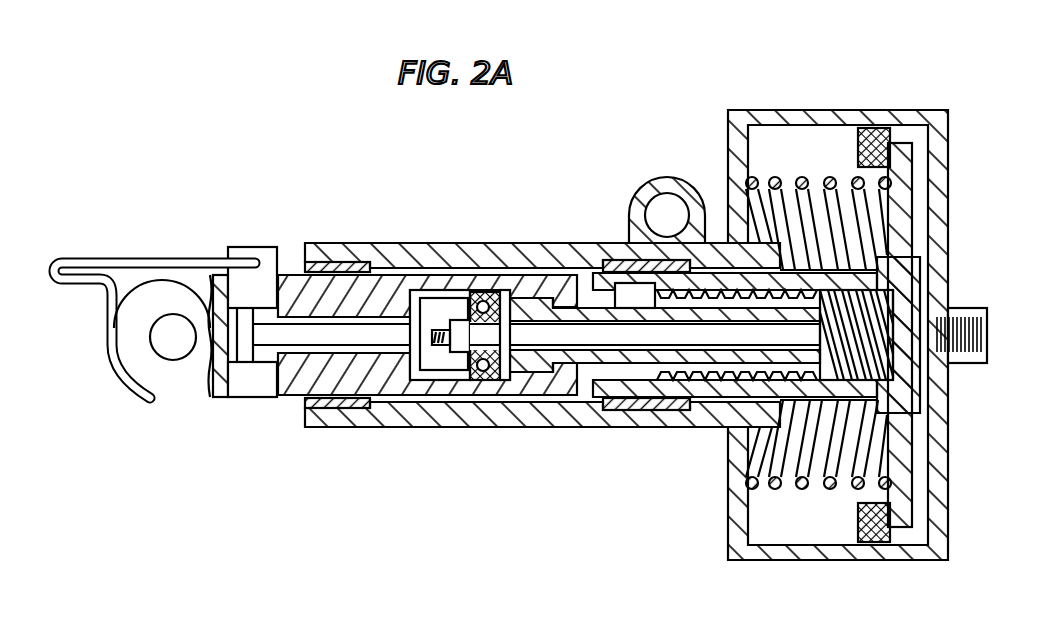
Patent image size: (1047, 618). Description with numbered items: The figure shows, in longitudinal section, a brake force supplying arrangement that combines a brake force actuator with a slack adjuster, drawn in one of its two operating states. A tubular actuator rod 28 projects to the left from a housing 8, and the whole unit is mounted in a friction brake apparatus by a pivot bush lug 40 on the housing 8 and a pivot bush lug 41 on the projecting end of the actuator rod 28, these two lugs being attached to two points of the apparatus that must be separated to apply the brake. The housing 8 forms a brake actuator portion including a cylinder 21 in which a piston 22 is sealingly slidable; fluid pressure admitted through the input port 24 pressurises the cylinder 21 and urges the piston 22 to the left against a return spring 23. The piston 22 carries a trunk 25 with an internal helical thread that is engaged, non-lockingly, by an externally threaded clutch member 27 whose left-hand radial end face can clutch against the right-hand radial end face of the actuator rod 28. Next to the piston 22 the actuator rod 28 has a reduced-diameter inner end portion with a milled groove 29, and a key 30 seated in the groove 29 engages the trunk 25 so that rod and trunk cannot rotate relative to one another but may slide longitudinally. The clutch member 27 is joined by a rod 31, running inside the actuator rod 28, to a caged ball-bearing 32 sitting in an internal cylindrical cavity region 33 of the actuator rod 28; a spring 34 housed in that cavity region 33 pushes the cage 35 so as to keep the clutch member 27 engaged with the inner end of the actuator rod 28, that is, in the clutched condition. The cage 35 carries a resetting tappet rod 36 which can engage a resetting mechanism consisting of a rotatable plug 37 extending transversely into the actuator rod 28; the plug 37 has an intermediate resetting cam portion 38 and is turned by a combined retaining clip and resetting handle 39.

The housing 8 is at (817, 560).
The cylinder 21 is at (815, 126).
The piston 22 is at (905, 218).
The return spring 23 is at (801, 178).
The fluid pressure input port 24 is at (988, 336).
The trunk 25 is at (853, 401).
The threaded clutch member 27 is at (880, 313).
The tubular actuator rod 28 is at (297, 380).
The groove 29 is at (598, 262).
The key 30 is at (632, 288).
The rod 31 is at (563, 334).
The caged ball-bearing 32 is at (490, 380).
The internal cylindrical cavity region 33 is at (443, 364).
The spring 34 is at (527, 299).
The cage 35 is at (437, 296).
The resetting tappet rod 36 is at (335, 330).
The rotatable plug 37 is at (260, 248).
The resetting cam portion 38 is at (240, 323).
The combined retaining clip and resetting handle 39 is at (53, 258).
The pivot bush lug 40 is at (667, 194).
The pivot bush lug 41 is at (175, 350).